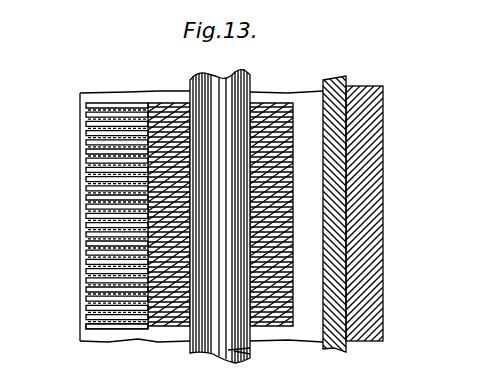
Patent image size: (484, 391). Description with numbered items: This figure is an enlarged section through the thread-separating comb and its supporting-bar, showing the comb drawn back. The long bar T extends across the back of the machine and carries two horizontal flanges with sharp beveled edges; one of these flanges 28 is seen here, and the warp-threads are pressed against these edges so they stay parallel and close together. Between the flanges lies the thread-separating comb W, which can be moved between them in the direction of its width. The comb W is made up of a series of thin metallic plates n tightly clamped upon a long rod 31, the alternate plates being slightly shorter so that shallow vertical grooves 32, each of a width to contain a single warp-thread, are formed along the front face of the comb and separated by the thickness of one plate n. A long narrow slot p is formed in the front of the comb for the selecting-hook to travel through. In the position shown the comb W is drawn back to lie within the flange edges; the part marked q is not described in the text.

The horizontal flange 28 is at (82, 86).
The shallow vertical grooves 32 is at (78, 117).
The long narrow slot p is at (88, 194).
The thin metallic plates n is at (94, 318).
The thread-separating comb W is at (160, 306).
The long rod 31 is at (205, 340).
The strip q is at (335, 70).
The long bar T is at (375, 167).